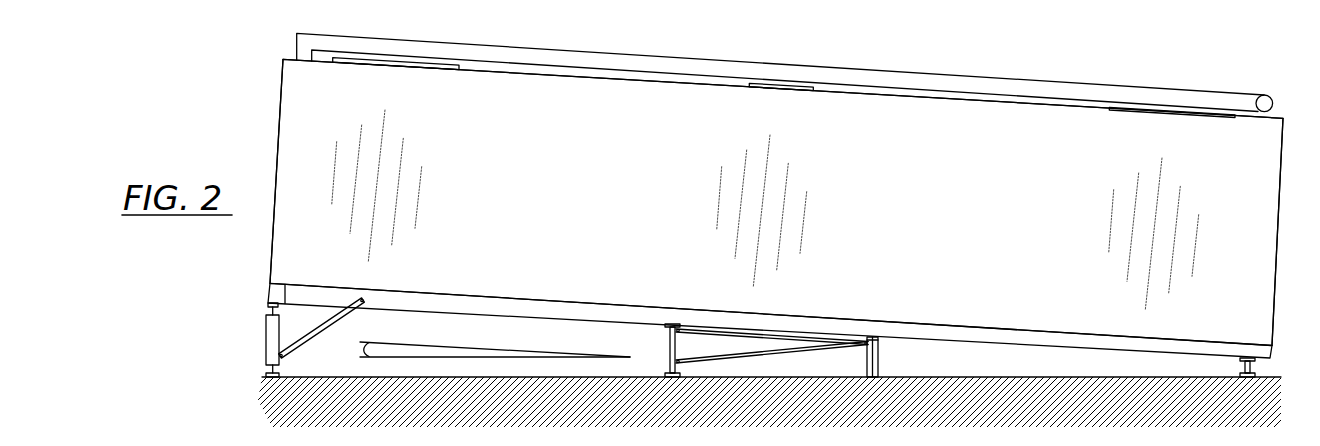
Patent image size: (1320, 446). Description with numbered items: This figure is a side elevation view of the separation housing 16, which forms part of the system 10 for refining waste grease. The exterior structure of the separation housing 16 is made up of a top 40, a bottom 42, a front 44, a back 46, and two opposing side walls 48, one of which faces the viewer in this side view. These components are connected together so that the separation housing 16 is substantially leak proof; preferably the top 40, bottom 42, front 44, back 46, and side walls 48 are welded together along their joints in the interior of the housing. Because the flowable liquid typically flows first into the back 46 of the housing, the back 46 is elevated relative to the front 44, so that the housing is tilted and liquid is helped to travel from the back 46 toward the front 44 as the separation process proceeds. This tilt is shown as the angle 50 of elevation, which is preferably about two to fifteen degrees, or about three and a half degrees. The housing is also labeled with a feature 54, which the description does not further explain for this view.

The system 10 is at (268, 280).
The separation housing 16 is at (229, 96).
The top 40 is at (973, 101).
The bottom 42 is at (982, 328).
The front 44 is at (1280, 197).
The back 46 is at (281, 120).
The side walls 48 is at (579, 212).
The angle of elevation 50 is at (370, 350).
The roller 54 is at (1050, 90).